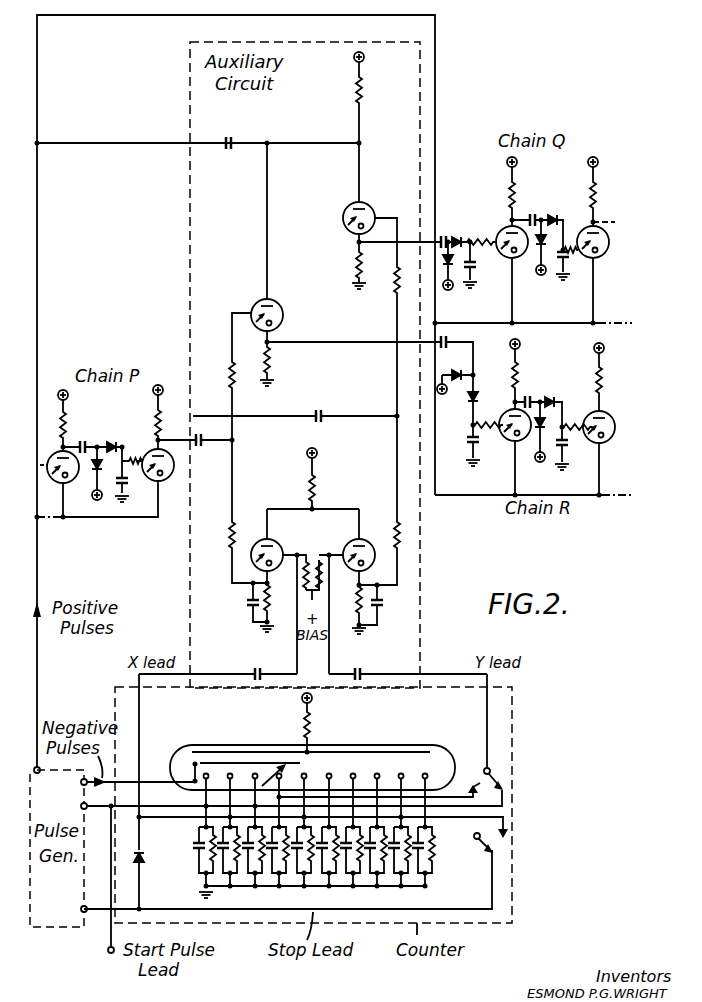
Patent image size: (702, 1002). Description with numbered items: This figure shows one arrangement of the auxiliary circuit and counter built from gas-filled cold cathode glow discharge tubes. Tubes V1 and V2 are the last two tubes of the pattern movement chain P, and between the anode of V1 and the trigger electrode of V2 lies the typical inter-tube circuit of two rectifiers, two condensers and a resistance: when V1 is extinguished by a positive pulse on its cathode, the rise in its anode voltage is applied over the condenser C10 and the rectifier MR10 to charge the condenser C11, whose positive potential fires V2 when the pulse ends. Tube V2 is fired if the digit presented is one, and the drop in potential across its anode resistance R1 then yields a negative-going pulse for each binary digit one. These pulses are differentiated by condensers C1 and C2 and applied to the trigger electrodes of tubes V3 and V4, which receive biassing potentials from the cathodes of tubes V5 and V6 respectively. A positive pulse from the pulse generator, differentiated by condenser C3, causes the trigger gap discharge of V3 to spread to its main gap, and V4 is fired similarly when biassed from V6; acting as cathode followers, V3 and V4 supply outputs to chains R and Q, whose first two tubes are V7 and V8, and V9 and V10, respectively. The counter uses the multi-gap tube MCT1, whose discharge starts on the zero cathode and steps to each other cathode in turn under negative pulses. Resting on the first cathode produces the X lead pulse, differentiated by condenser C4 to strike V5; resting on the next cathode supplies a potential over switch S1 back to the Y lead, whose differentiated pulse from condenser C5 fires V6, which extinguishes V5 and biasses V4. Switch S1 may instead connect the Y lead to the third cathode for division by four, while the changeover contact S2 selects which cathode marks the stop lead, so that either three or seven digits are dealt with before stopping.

The gas-filled cold cathode glow discharge tube V1 is at (67, 474).
The gas-filled cold cathode glow discharge tube V2 is at (163, 473).
The gas-filled cold cathode glow discharge tube V3 is at (278, 315).
The gas-filled cold cathode glow discharge tube V4 is at (370, 215).
The gas-filled cold cathode glow discharge tube V5 is at (277, 549).
The gas-filled cold cathode glow discharge tube V6 is at (367, 544).
The gas-filled cold cathode glow discharge tube V7 is at (509, 432).
The gas-filled cold cathode glow discharge tube V8 is at (593, 434).
The gas-filled cold cathode glow discharge tube V9 is at (506, 251).
The gas-filled cold cathode glow discharge tube V10 is at (588, 251).
The condenser C1 is at (195, 449).
The condenser C2 is at (295, 424).
The condenser C3 is at (230, 133).
The condenser C4 is at (218, 666).
The condenser C5 is at (408, 666).
The condenser C10 is at (81, 437).
The condenser C11 is at (127, 486).
The anode resistance R1 is at (171, 423).
The rectifier MR10 is at (112, 441).
The multi-gap gas-filled cold cathode glow discharge tube MCT1 is at (312, 759).
The switch S1 is at (489, 779).
The changeover contact switch S2 is at (493, 845).